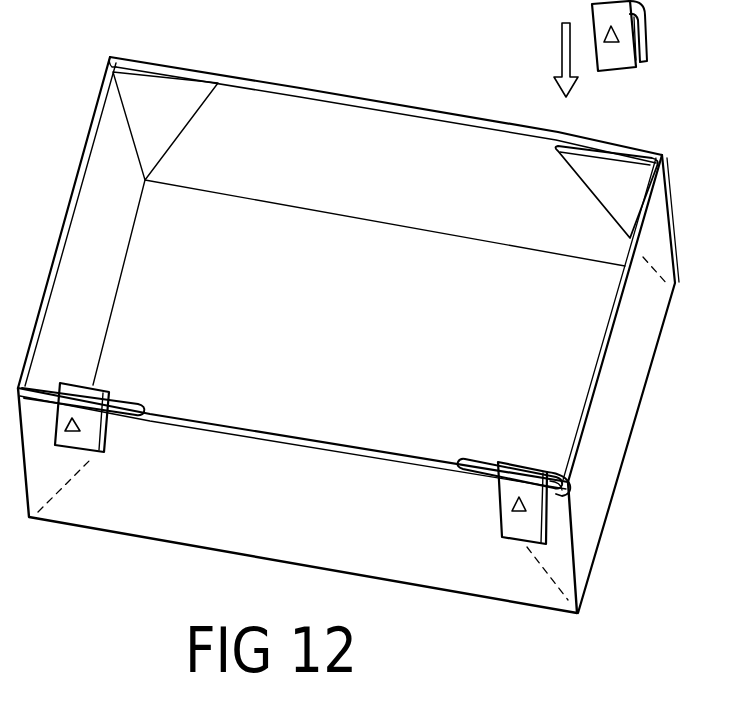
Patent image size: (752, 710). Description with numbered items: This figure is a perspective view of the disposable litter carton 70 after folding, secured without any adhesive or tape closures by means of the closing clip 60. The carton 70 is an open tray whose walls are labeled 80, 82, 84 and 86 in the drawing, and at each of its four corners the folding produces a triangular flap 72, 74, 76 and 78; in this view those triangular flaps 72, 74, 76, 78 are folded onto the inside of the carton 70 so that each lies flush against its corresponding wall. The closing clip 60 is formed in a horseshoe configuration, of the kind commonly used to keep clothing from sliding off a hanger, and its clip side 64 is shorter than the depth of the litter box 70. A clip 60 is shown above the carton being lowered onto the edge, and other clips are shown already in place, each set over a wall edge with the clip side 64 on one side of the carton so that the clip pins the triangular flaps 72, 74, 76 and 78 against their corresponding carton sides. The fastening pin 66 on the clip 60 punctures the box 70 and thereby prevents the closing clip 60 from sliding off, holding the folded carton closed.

The closing clip 60 is at (672, 8).
The clip side 64 is at (107, 444).
The fastening pin 66 is at (513, 517).
The disposable litter carton 70 is at (698, 207).
The triangular flap 72 is at (612, 174).
The triangular flap 74 is at (466, 464).
The triangular flap 76 is at (128, 406).
The triangular flap 78 is at (176, 104).
The rear wall 80 is at (378, 126).
The right side wall 82 is at (636, 380).
The front wall 84 is at (240, 536).
The left side wall 86 is at (86, 180).